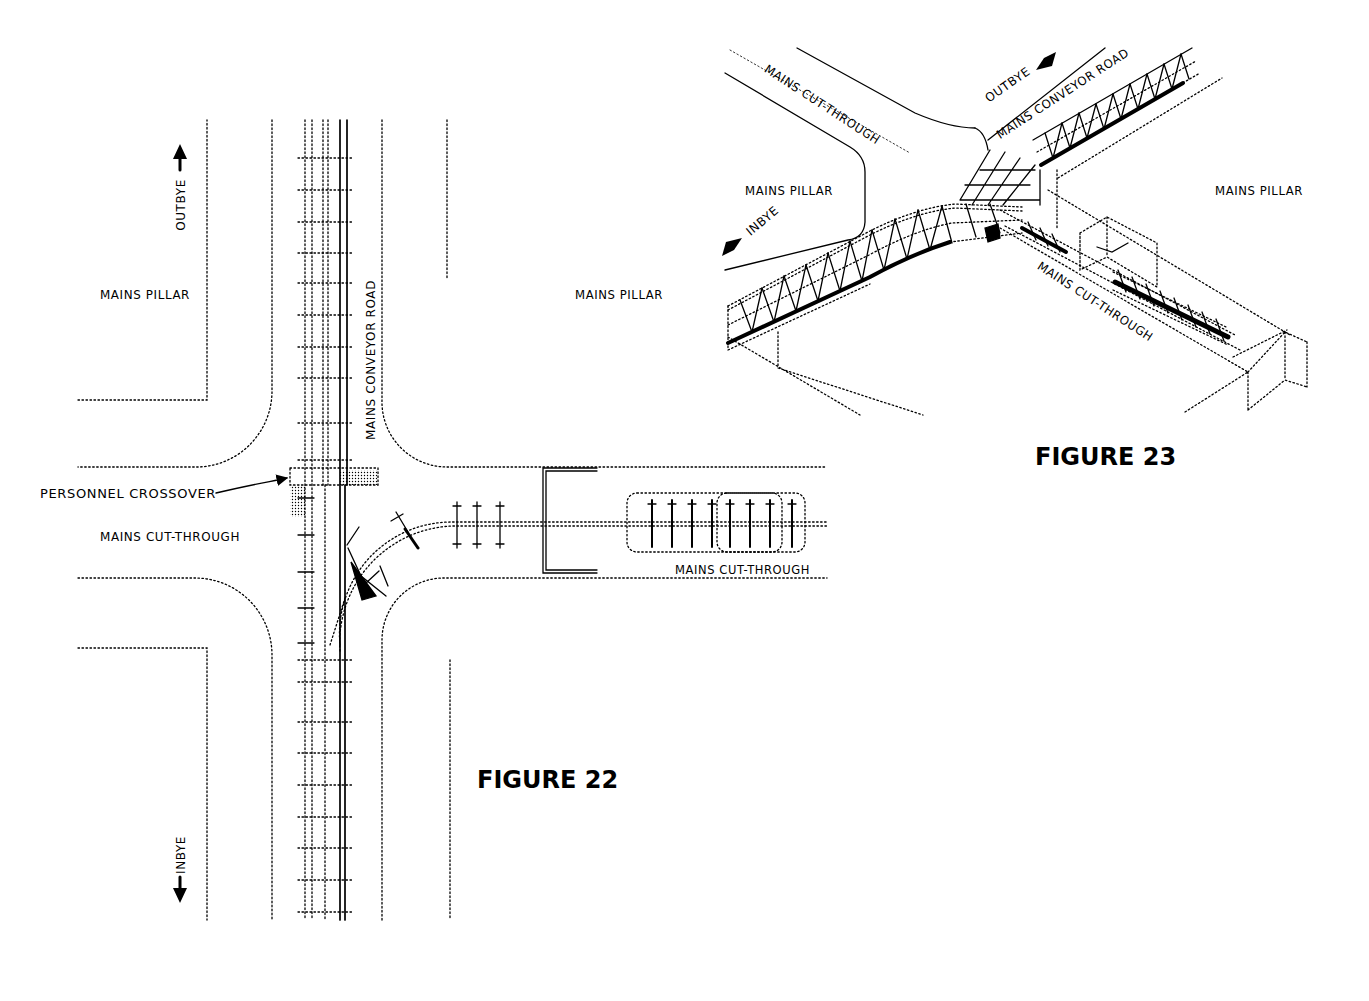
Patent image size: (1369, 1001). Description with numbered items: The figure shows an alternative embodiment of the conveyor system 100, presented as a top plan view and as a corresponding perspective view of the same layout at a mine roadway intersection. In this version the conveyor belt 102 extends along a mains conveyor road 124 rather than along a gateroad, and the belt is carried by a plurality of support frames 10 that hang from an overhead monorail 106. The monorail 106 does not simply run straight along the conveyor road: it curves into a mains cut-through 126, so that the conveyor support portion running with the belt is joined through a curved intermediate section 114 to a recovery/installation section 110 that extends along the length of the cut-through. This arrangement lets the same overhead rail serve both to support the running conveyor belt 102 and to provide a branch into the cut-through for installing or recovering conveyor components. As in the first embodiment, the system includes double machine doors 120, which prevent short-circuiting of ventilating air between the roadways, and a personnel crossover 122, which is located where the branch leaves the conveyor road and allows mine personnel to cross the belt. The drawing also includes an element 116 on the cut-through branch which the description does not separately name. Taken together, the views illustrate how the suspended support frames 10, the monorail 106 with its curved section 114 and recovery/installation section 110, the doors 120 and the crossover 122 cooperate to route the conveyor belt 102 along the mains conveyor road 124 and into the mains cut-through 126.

In FIG. 22, the support frame 10 is at (348, 742).
In FIG. 22, the conveyor system 100 is at (471, 366).
In FIG. 23, the conveyor system 100 is at (814, 149).
In FIG. 22, the conveyor belt 102 is at (346, 239).
In FIG. 23, the conveyor belt 102 is at (1090, 151).
In FIG. 22, the monorail 106 is at (328, 170).
In FIG. 23, the monorail 106 is at (1132, 125).
In FIG. 23, the recovery/installation section 110 is at (1108, 262).
In FIG. 23, the curved intermediate section 114 is at (990, 233).
In FIG. 23, the conveyor module 116 is at (1205, 300).
In FIG. 23, the double machine doors 120 is at (1100, 218).
In FIG. 23, the personnel crossover 122 is at (975, 128).
In FIG. 22, the mains conveyor road 124 is at (290, 792).
In FIG. 22, the mains cut-through 126 is at (611, 553).